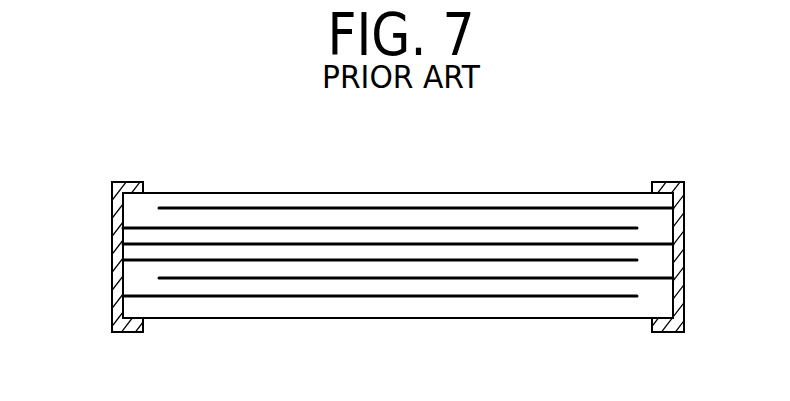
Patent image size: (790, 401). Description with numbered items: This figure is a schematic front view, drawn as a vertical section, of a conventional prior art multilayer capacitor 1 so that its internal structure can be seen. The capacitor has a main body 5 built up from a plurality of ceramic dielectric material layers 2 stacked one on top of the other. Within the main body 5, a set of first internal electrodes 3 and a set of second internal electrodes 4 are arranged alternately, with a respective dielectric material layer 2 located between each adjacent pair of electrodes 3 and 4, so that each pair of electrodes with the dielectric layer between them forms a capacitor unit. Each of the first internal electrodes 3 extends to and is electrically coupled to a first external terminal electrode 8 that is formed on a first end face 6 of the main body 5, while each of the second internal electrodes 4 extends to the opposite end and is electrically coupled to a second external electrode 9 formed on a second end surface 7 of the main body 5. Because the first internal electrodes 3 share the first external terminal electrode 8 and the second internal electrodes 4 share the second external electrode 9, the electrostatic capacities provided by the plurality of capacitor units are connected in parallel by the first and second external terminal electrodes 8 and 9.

The multilayer capacitor 1 is at (111, 130).
The ceramic dielectric material layers 2 is at (282, 253).
The first internal electrodes 3 is at (212, 230).
The second internal electrodes 4 is at (422, 277).
The main body 5 is at (515, 193).
The first end face 6 is at (126, 214).
The second end surface 7 is at (673, 222).
The first external terminal electrode 8 is at (112, 275).
The second external electrode 9 is at (692, 225).